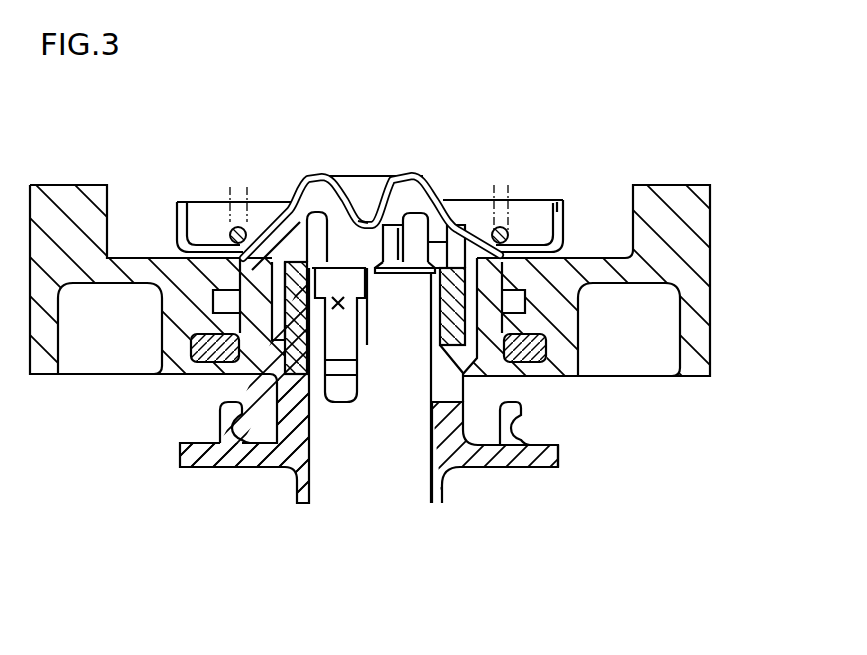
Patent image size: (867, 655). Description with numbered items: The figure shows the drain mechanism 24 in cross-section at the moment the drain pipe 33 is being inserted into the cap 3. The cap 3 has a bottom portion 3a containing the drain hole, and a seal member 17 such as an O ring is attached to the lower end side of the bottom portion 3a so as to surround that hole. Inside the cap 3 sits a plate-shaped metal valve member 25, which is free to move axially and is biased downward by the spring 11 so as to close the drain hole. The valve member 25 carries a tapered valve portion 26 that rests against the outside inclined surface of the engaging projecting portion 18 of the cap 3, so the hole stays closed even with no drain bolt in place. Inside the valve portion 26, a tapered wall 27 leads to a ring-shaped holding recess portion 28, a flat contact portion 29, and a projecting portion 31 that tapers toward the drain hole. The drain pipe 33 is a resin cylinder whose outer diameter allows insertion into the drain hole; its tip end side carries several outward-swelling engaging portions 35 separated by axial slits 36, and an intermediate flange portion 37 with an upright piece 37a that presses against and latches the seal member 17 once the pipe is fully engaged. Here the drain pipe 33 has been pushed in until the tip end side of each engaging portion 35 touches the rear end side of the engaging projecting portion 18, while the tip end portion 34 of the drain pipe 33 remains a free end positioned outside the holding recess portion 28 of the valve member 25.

The cap 3 is at (686, 208).
The bottom portion 3a is at (170, 343).
The spring 11 is at (510, 228).
The seal member 17 is at (533, 352).
The engaging projecting portion 18 is at (472, 250).
The drain mechanism 24 is at (581, 473).
The valve member 25 is at (171, 212).
The valve portion 26 is at (275, 240).
The tapered wall 27 is at (312, 212).
The holding recess portion 28 is at (327, 178).
The contact portion 29 is at (360, 222).
The projecting portion 31 is at (380, 192).
The drain pipe 33 is at (501, 474).
The tip end portion 34 is at (310, 177).
The engaging portion 35 is at (245, 262).
The slit 36 is at (338, 309).
The flange portion 37 is at (225, 458).
The upright piece 37a is at (222, 407).